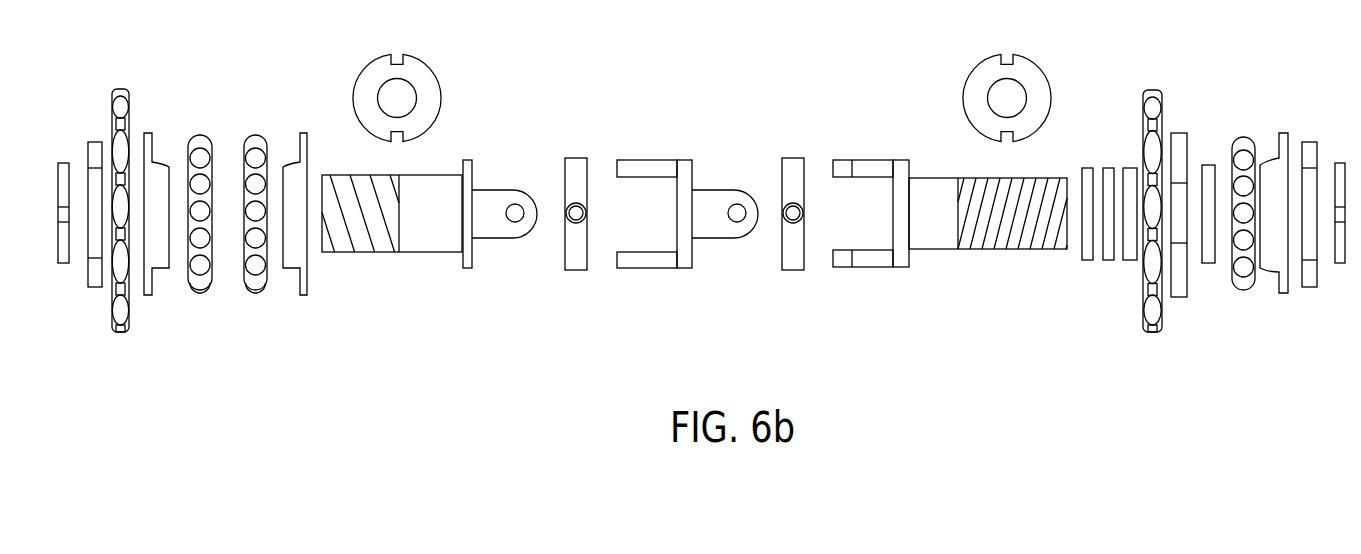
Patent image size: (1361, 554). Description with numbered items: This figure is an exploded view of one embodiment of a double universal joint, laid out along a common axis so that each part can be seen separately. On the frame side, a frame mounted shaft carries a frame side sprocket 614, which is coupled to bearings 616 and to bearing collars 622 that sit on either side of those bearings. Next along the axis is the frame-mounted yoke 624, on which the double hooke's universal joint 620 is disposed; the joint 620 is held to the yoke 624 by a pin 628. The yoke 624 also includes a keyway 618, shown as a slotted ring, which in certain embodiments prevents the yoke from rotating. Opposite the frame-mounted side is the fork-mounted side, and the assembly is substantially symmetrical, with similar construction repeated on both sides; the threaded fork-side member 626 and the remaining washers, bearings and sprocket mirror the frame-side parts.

The frame side sprocket 614 is at (112, 122).
The bearings 616 is at (257, 132).
The keyway 618 is at (397, 54).
The double hooke's universal joint 620 is at (683, 270).
The bearing collars 622 is at (300, 272).
The frame-mounted yoke 624 is at (386, 270).
The threaded shaft 626 is at (937, 252).
The pin 628 is at (578, 272).